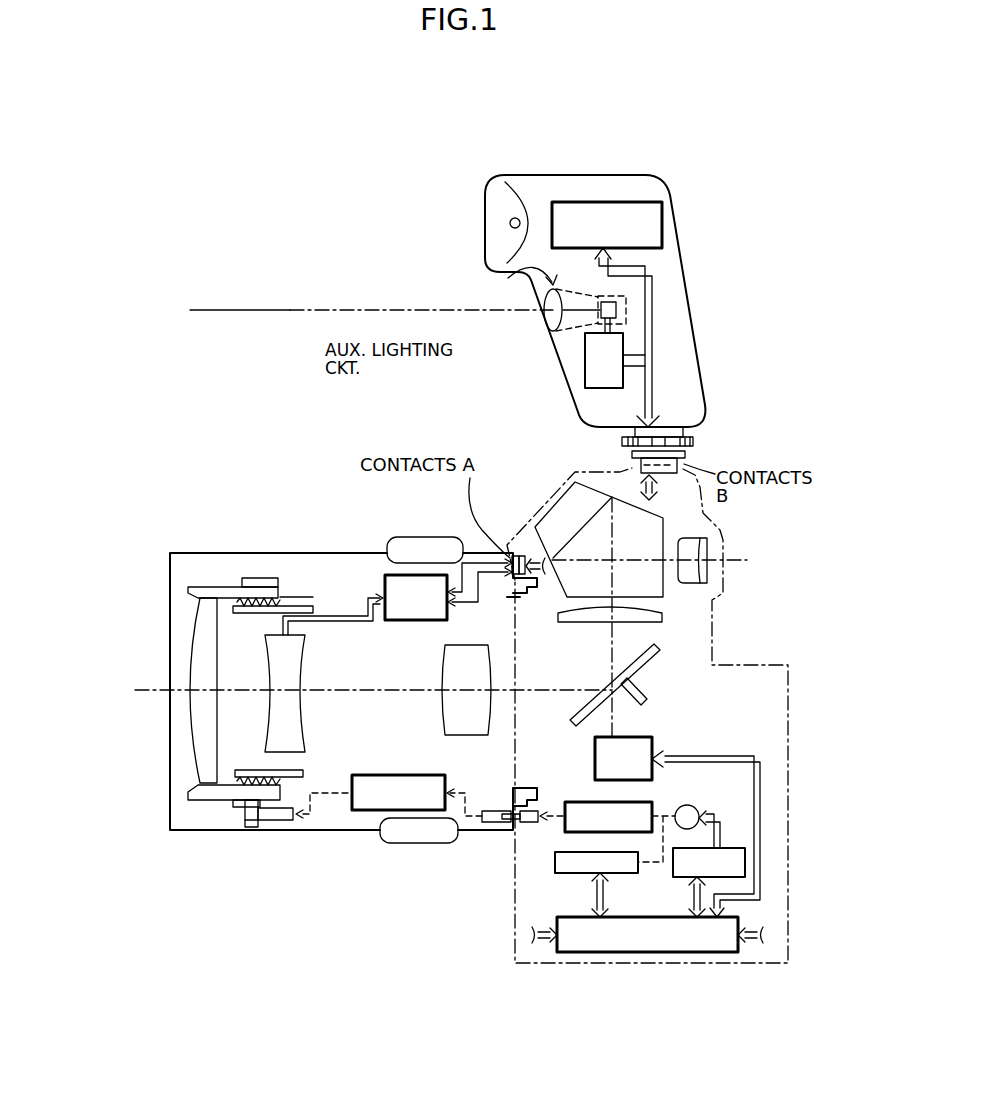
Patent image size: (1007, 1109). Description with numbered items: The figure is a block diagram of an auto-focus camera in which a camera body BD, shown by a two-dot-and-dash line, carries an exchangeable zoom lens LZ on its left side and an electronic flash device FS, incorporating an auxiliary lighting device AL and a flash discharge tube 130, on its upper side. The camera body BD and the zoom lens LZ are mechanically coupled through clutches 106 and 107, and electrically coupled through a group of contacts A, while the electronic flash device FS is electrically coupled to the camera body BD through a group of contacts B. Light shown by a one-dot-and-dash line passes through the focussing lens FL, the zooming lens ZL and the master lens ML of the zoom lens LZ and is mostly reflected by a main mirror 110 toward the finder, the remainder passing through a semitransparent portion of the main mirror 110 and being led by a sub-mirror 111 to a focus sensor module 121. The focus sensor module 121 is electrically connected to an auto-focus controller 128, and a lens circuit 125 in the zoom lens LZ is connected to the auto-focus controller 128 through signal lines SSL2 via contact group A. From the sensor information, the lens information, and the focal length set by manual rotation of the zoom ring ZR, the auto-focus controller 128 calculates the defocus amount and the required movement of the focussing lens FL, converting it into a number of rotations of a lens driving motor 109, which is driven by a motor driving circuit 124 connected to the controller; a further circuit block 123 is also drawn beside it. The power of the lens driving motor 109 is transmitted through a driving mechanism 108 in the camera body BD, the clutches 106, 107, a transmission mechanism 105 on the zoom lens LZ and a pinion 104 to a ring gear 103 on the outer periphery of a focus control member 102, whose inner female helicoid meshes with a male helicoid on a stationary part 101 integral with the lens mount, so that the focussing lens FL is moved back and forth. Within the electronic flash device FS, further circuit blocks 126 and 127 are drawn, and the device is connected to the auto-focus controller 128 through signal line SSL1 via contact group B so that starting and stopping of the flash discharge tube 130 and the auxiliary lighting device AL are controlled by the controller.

The stationary part 101 is at (305, 601).
The focus control member 102 is at (197, 590).
The ring gear 103 is at (262, 578).
The pinion 104 is at (252, 828).
The transmission mechanism 105 is at (396, 771).
The clutch 106 is at (492, 822).
The clutch 107 is at (523, 822).
The driving mechanism 108 is at (597, 794).
The lens driving motor 109 is at (692, 805).
The main mirror 110 is at (647, 654).
The sub-mirror 111 is at (645, 690).
The focus sensor module 121 is at (641, 727).
The circuit 123 is at (573, 875).
The motor driving circuit 124 is at (675, 878).
The lens circuit 125 is at (407, 621).
The flash control circuit 126 is at (572, 202).
The auxiliary lighting circuit 127 is at (585, 360).
The auto-focus controller 128 is at (652, 954).
The flash discharge tube 130 is at (510, 221).
The electronic flash device FS is at (637, 173).
The camera body BD is at (703, 462).
The zoom lens LZ is at (210, 543).
The zoom ring ZR is at (412, 537).
The focussing lens FL is at (198, 723).
The zooming lens ZL is at (293, 708).
The master lens ML is at (468, 730).
The auxiliary lighting device AL is at (508, 278).
The signal line SSL1 is at (652, 390).
The signal lines SSL2 is at (545, 955).